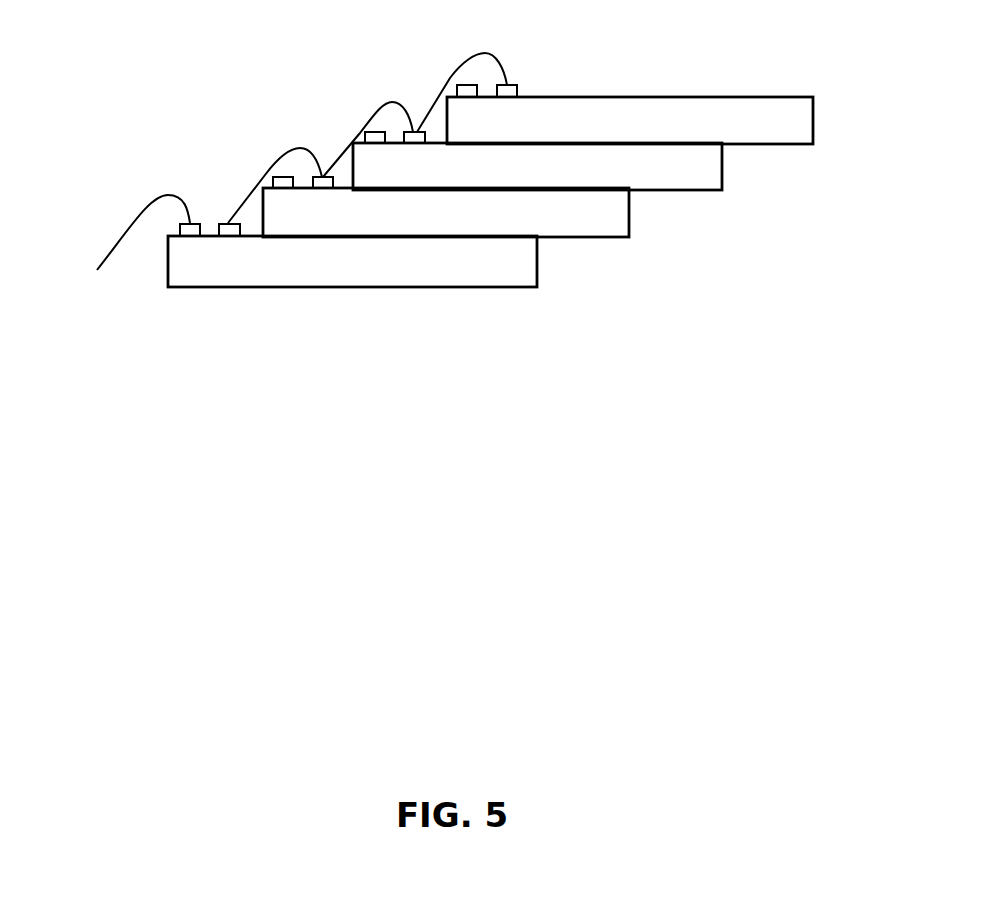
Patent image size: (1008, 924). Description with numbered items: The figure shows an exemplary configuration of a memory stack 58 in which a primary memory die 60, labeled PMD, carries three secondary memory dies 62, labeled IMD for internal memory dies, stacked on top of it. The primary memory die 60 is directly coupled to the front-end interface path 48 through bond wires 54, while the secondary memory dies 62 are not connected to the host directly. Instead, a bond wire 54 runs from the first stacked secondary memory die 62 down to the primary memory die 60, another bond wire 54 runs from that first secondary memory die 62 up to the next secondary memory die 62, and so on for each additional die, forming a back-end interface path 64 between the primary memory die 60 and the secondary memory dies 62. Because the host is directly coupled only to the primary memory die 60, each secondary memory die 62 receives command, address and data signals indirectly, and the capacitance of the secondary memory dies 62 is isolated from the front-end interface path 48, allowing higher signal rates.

The front-end interface path 48 is at (100, 243).
The bond wire 54 is at (273, 148).
The memory stack 58 is at (530, 161).
The primary memory die 60 is at (540, 255).
The secondary memory die 62 is at (630, 217).
The back-end interface path 64 is at (330, 138).